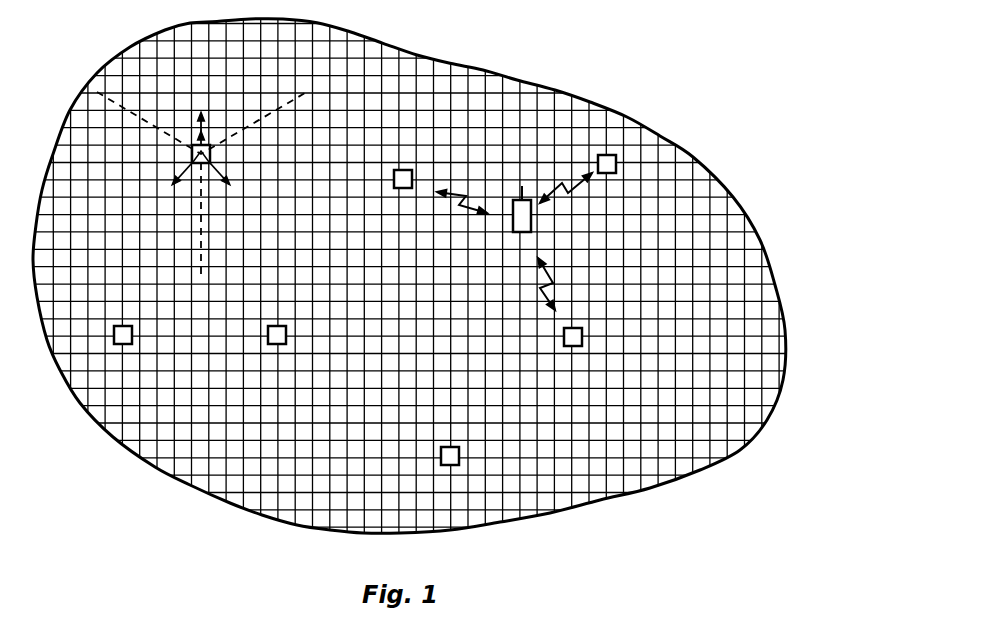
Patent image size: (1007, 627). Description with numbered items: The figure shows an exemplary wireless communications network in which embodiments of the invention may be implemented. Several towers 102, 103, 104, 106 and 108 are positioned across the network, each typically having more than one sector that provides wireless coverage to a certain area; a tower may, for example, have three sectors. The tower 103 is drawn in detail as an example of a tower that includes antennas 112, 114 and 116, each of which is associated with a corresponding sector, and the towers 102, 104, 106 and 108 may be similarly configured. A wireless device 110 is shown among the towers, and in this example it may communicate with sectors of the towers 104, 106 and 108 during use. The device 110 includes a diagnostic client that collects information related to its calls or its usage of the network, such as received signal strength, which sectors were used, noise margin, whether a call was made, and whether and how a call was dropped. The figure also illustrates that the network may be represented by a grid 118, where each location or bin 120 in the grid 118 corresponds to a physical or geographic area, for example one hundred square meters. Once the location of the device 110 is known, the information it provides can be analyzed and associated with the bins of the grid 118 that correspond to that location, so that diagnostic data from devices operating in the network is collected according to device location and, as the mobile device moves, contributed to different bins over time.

The tower 102 is at (130, 346).
The tower 103 is at (238, 154).
The tower 104 is at (404, 170).
The tower 106 is at (577, 347).
The tower 108 is at (611, 174).
The wireless device 110 is at (526, 233).
The antenna 112 is at (204, 124).
The antenna 114 is at (226, 178).
The antenna 116 is at (178, 169).
The grid 118 is at (633, 470).
The bin 120 is at (200, 429).